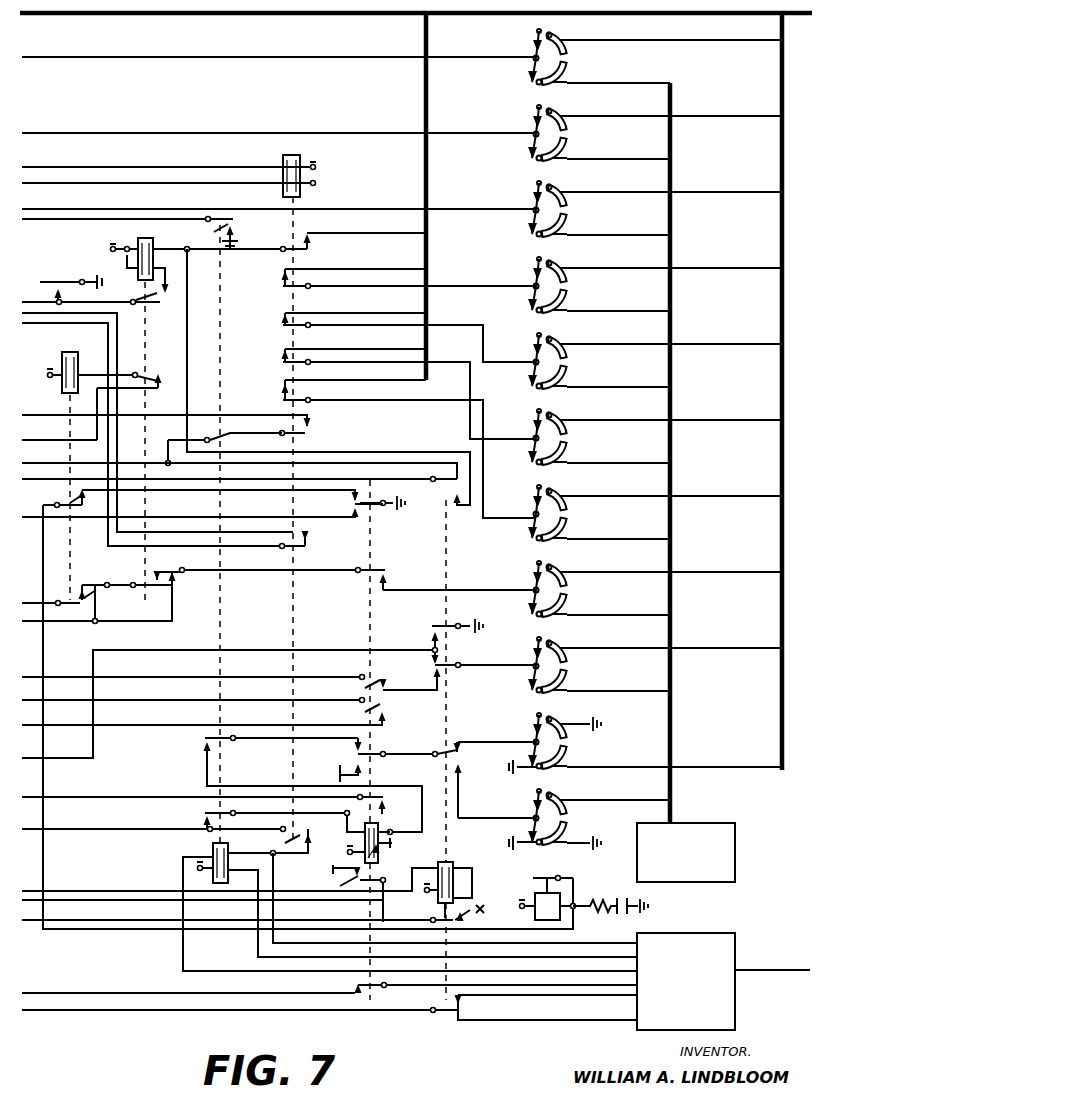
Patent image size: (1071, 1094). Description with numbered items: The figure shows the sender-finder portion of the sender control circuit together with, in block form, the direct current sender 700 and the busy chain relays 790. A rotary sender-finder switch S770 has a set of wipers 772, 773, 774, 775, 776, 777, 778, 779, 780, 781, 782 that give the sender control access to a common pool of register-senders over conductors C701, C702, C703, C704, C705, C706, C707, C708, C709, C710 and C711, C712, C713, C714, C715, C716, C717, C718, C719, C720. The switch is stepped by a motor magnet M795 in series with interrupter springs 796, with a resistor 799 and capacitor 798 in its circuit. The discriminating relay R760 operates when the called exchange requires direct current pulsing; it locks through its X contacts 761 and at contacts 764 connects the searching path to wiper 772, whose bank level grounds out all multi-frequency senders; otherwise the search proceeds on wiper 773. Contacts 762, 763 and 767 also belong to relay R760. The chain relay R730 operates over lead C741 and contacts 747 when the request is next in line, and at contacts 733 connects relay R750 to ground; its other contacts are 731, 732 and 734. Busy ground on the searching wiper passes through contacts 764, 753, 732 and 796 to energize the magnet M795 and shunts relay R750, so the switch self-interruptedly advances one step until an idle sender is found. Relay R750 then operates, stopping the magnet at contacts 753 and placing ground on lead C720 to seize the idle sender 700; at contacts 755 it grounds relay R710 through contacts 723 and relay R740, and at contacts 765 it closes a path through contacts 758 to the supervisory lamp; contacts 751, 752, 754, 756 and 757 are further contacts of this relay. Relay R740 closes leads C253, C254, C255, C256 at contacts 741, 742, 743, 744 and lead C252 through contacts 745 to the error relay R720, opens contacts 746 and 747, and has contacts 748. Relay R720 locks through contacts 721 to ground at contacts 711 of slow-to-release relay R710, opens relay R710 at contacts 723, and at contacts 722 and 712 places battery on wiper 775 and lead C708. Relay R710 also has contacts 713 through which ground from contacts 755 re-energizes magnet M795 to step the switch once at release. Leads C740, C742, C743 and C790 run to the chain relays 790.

The direct current sender 700 is at (686, 852).
The chain relay 790 is at (686, 981).
The sender-finder switch S770 is at (609, 32).
The contacts of relay R710 711 is at (36, 282).
The contacts of relay R710 712 is at (88, 603).
The contacts of relay R710 713 is at (72, 498).
The contacts of relay R720 721 is at (150, 297).
The contacts of relay R720 722 is at (150, 580).
The contacts of relay R720 723 is at (165, 378).
The contacts of relay R730 731 is at (130, 233).
The contacts of relay R730 732 is at (206, 740).
The contacts of relay R730 733 is at (205, 814).
The contacts of relay R730 734 is at (232, 441).
The contacts of relay R740 741 is at (280, 278).
The contacts of relay R740 742 is at (280, 315).
The contacts of relay R740 743 is at (280, 352).
The contacts of relay R740 744 is at (280, 389).
The contacts of relay R740 745 is at (303, 244).
The contacts of relay R740 746 is at (308, 544).
The contacts of relay R740 747 is at (300, 837).
The contacts of relay R740 748 is at (308, 432).
The contacts of relay R750 751 is at (383, 576).
The contacts of relay R750 752 is at (373, 680).
The contacts of relay R750 753 is at (352, 752).
The contacts of relay R750 754 is at (380, 803).
The contacts of relay R750 755 is at (348, 503).
The contacts of relay R750 756 is at (352, 990).
The contacts of relay R750 757 is at (340, 884).
The contacts of relay R750 758 is at (373, 705).
The X contacts of relay R760 761 is at (450, 914).
The contacts of relay R760 762 is at (448, 483).
The contacts of relay R760 763 is at (430, 667).
The contacts of relay R760 764 is at (452, 762).
The contacts of relay R750 765 is at (428, 633).
The contacts of relay R760 767 is at (460, 1010).
The wiper of switch S770 772 is at (529, 819).
The wiper of switch S770 773 is at (529, 743).
The wiper of switch S770 774 is at (501, 665).
The wiper of switch S770 775 is at (475, 589).
The wiper of switch S770 776 is at (425, 469).
The wiper of switch S770 777 is at (425, 412).
The wiper of switch S770 778 is at (425, 356).
The wiper of switch S770 779 is at (425, 285).
The wiper of switch S770 780 is at (294, 209).
The wiper of switch S770 781 is at (294, 133).
The wiper of switch S770 782 is at (294, 57).
The interrupter springs 796 is at (543, 876).
The capacitor 798 is at (632, 914).
The resistor 799 is at (594, 903).
The motor magnet M795 is at (537, 918).
The slow-to-release relay R710 is at (82, 350).
The error relay R720 is at (136, 240).
The chain relay R730 is at (210, 850).
The keyset connecting relay R740 is at (293, 155).
The sender seizing relay R750 is at (392, 848).
The discriminating relay R760 is at (258, 882).
The lead C252 is at (366, 224).
The lead C253 is at (355, 261).
The lead C254 is at (355, 304).
The lead C255 is at (355, 340).
The lead C256 is at (355, 371).
The tip lead C701 is at (674, 32).
The ring lead C702 is at (674, 107).
The sleeve lead C703 is at (674, 184).
The lead C704 is at (674, 260).
The lead C705 is at (674, 336).
The lead C706 is at (674, 412).
The lead C707 is at (674, 488).
The lead C708 is at (674, 564).
The lead C709 is at (674, 640).
The lead C710 is at (674, 759).
The lead C711 is at (618, 75).
The lead C712 is at (618, 151).
The lead C713 is at (618, 227).
The lead C714 is at (618, 303).
The lead C715 is at (618, 379).
The lead C716 is at (618, 455).
The lead C717 is at (618, 531).
The lead C718 is at (618, 607).
The lead C719 is at (618, 683).
The lead C720 is at (618, 792).
The lead C740 is at (522, 979).
The lead C741 is at (643, 964).
The lead C742 is at (643, 950).
The lead C743 is at (643, 936).
The lead C790 is at (748, 963).